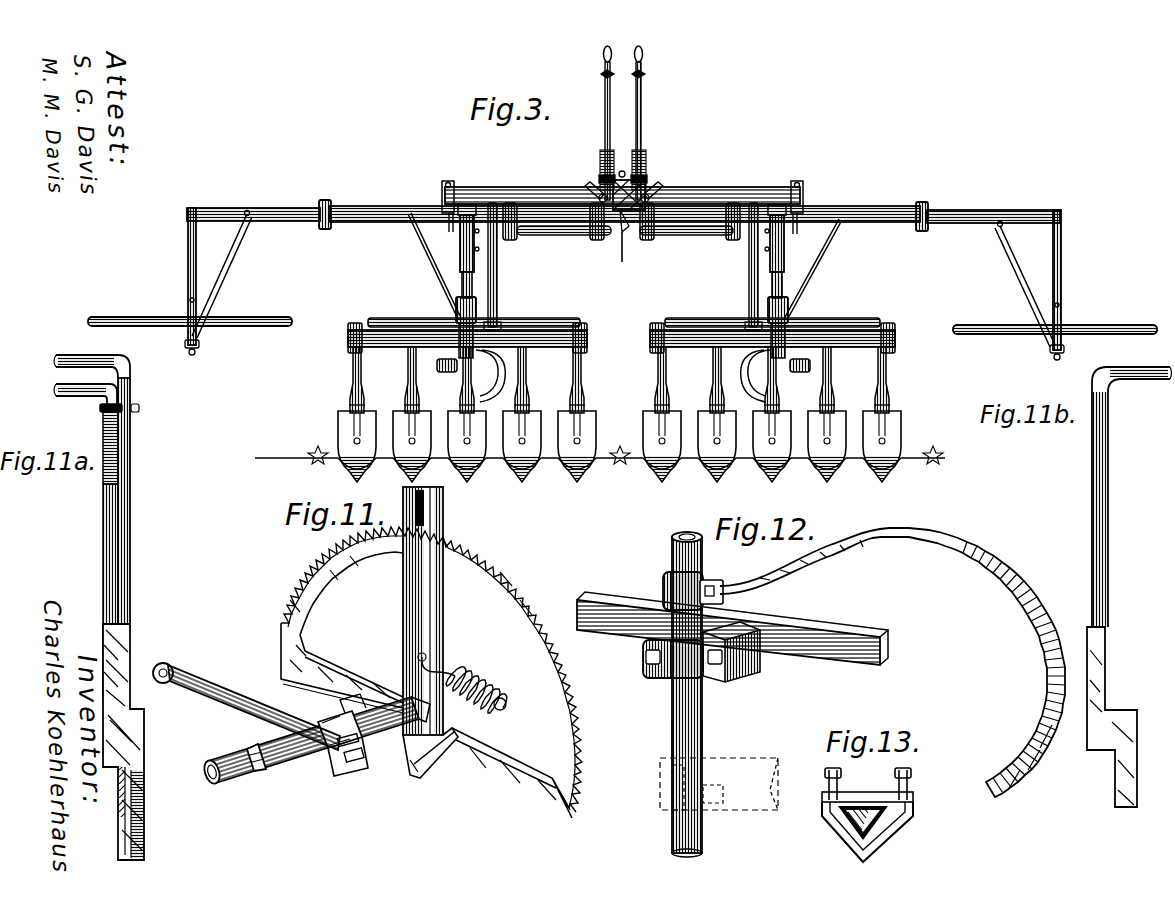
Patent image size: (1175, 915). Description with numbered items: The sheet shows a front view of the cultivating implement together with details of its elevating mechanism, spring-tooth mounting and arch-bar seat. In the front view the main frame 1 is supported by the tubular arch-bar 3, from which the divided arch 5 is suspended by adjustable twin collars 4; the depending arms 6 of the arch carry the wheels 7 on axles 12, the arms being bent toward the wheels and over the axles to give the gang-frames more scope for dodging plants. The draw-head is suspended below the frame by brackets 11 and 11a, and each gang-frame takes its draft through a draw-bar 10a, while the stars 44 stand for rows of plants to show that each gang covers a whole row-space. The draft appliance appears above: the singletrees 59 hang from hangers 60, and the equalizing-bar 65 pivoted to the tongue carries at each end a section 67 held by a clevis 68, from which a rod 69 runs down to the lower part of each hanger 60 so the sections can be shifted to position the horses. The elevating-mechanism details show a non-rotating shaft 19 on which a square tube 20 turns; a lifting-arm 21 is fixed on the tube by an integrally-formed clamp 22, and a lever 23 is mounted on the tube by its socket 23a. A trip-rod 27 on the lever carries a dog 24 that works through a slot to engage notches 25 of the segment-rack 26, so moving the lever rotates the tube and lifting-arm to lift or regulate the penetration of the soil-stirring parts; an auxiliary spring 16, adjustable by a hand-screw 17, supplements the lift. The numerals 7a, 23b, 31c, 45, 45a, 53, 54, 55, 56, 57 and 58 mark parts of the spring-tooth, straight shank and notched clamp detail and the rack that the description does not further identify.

In FIG. 3, the main frame 1 is at (503, 194).
In FIG. 3, the arch-bar 3 is at (460, 240).
In FIG. 3, the twin collars 4 is at (512, 240).
In FIG. 3, the divided arch 5 is at (555, 236).
In FIG. 3, the depending arms 6 is at (498, 306).
In FIG. 3, the wheels 7 is at (622, 327).
In FIG. 3, the boss 7a is at (447, 366).
In FIG. 3, the draw-bar 10a is at (473, 288).
In FIG. 3, the brackets 11 is at (448, 222).
In FIG. 3, the bracket 11a is at (652, 286).
In FIG. 3, the axle 12 is at (450, 378).
In FIG. 3, the auxiliary spring 16 is at (605, 176).
In FIG. 11, the auxiliary spring 16 is at (500, 708).
In FIG. 3, the hand-screw 17 is at (588, 186).
In FIG. 11, the non-rotating shaft 19 is at (212, 786).
In FIG. 11, the tube 20 is at (258, 776).
In FIG. 11, the lifting-arm 21 is at (196, 700).
In FIG. 11, the clamp 22 is at (352, 776).
In FIG. 3, the lever 23 is at (606, 128).
In FIG. 11, the lever 23 is at (428, 615).
In FIG. 11A, the lever 23 is at (131, 594).
In FIG. 11, the socket 23a is at (420, 770).
In FIG. 11A, the block 23b is at (130, 668).
In FIG. 11A, the dog 24 is at (140, 795).
In FIG. 11B, the dog 24 is at (1137, 790).
In FIG. 3, the notches 25 is at (618, 155).
In FIG. 11A, the notches 25 is at (144, 840).
In FIG. 11, the segment-rack 26 is at (540, 668).
In FIG. 11A, the trip-rod 27 is at (118, 605).
In FIG. 11B, the trip-rod 27 is at (1106, 560).
In FIG. 12, the bar 31c is at (856, 654).
In FIG. 3, the stars 44 is at (318, 446).
In FIG. 3, the shovel 45 is at (619, 414).
In FIG. 3, the shovel bar 45a is at (588, 340).
In FIG. 12, the shovel bar 45a is at (718, 698).
In FIG. 12, the curved band 53 is at (1048, 672).
In FIG. 12, the strap 54 is at (736, 582).
In FIG. 12, the clamp 55 is at (722, 594).
In FIG. 12, the pipe 56 is at (672, 556).
In FIG. 12, the block 57 is at (750, 628).
In FIG. 12, the clamp 58 is at (722, 682).
In FIG. 3, the singletrees 59 is at (146, 317).
In FIG. 3, the hangers 60 is at (188, 265).
In FIG. 3, the equalizing-bar 65 is at (395, 200).
In FIG. 3, the section 67 is at (278, 209).
In FIG. 3, the clevis 68 is at (326, 230).
In FIG. 3, the rod 69 is at (225, 268).